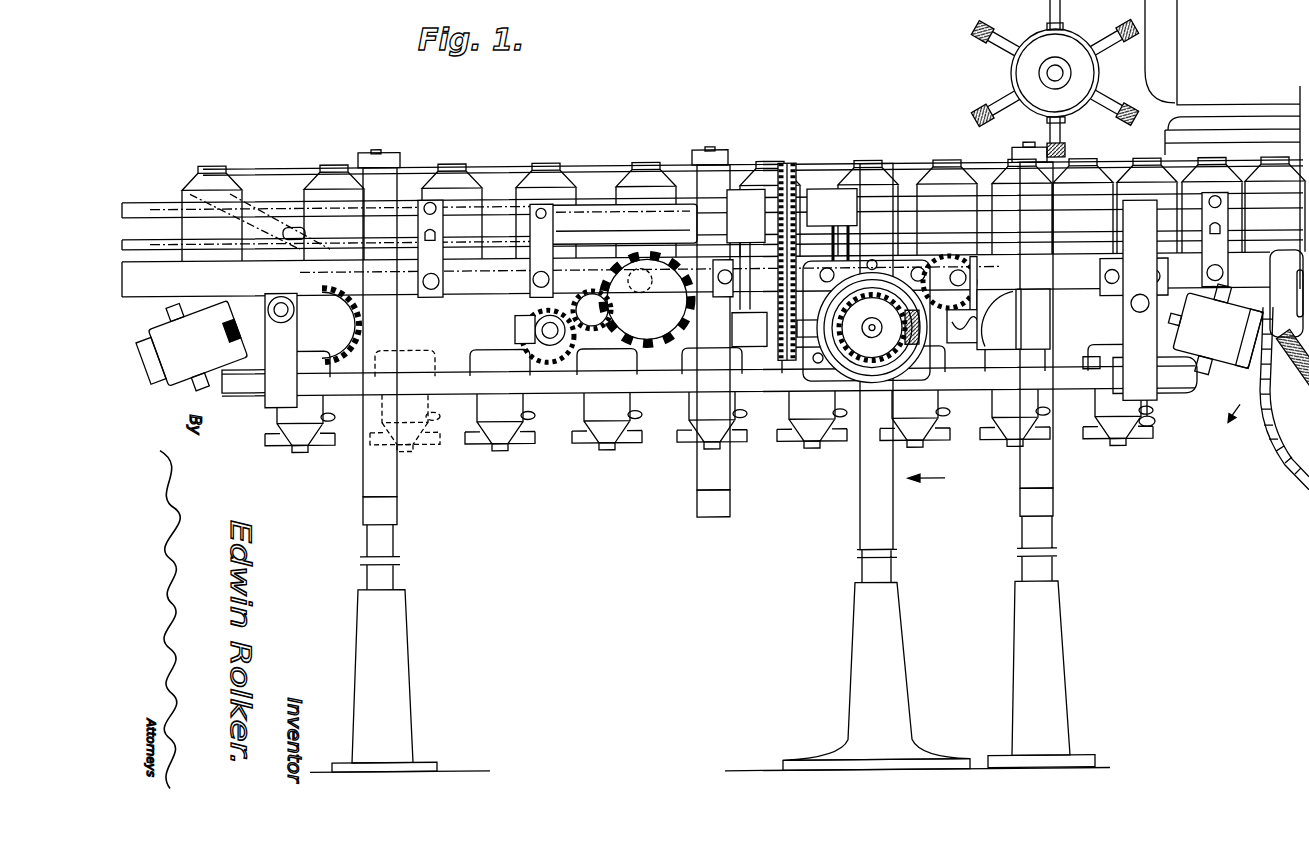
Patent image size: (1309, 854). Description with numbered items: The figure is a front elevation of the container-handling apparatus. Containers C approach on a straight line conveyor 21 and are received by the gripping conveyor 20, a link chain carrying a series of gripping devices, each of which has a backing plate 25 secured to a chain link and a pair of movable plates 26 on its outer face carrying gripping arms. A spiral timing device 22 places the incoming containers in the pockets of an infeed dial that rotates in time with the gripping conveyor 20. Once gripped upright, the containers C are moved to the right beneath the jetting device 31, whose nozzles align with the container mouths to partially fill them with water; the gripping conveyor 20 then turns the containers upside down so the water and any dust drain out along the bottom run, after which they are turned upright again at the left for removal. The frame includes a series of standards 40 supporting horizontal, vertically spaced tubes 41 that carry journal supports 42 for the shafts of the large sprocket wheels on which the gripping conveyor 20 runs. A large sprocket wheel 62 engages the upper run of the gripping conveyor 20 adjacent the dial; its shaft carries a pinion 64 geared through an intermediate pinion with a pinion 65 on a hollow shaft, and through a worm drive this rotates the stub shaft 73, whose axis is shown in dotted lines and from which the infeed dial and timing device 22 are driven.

The gripping conveyor 20 is at (290, 231).
The straight line conveyor 21 is at (135, 264).
The timing device 22 is at (903, 175).
The backing plate 25 is at (1143, 450).
The movable plate 26 is at (1147, 431).
The jetting device 31 is at (988, 60).
The standard 40 is at (400, 554).
The tube 41 is at (473, 285).
The journal support 42 is at (273, 342).
The sprocket wheel 62 is at (1082, 366).
The pinion 64 is at (1021, 324).
The pinion 65 is at (836, 368).
The stub shaft 73 is at (905, 368).
The container C is at (866, 168).